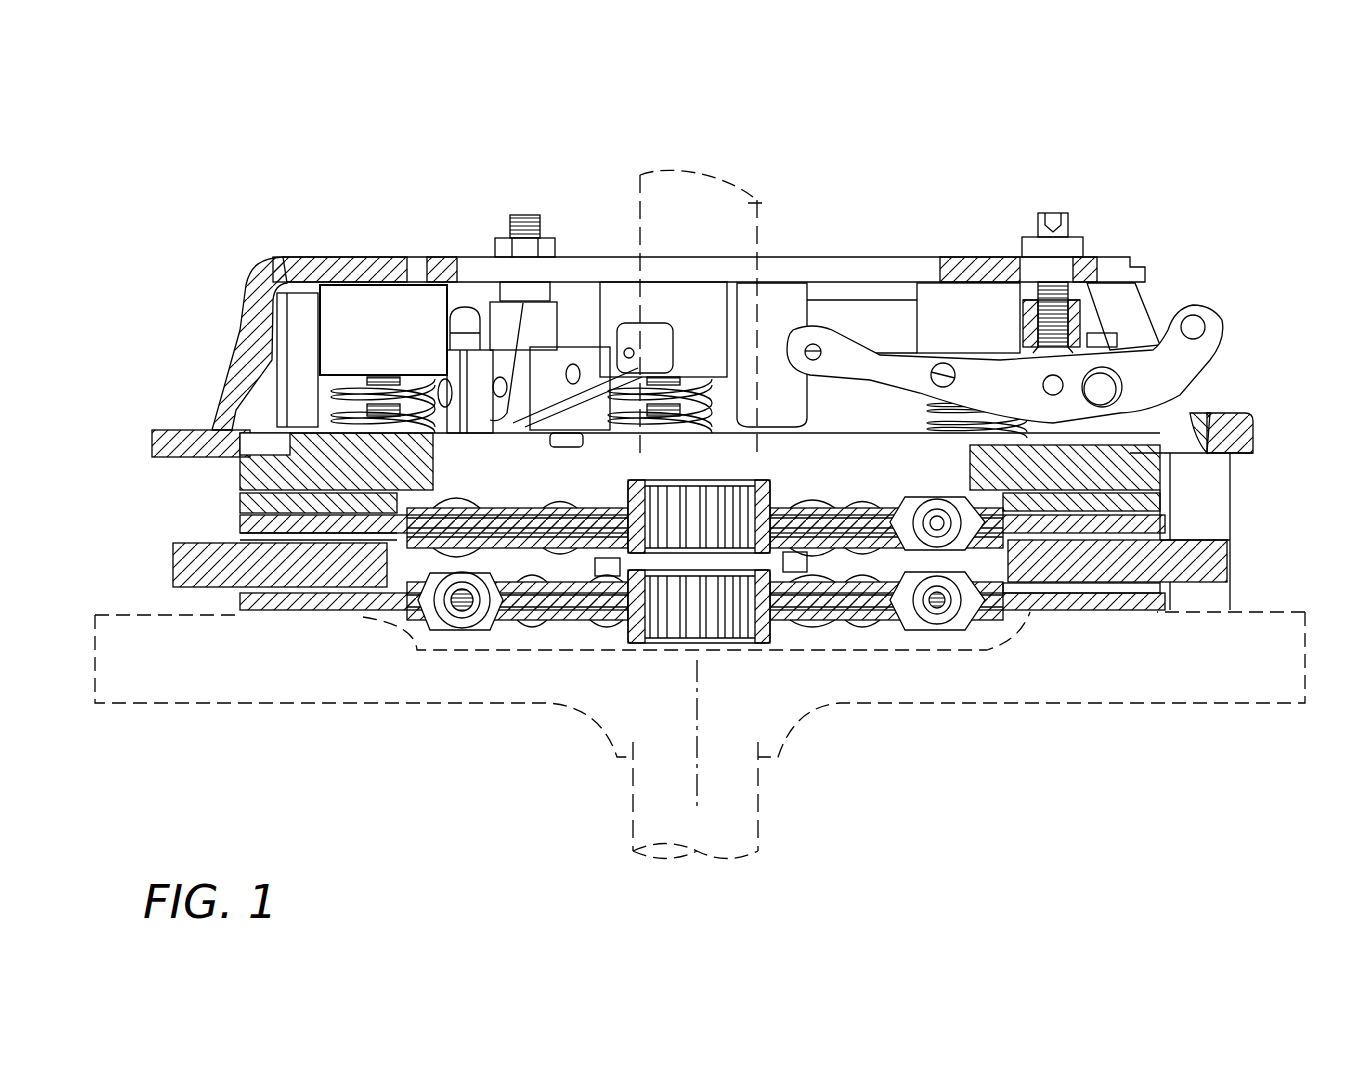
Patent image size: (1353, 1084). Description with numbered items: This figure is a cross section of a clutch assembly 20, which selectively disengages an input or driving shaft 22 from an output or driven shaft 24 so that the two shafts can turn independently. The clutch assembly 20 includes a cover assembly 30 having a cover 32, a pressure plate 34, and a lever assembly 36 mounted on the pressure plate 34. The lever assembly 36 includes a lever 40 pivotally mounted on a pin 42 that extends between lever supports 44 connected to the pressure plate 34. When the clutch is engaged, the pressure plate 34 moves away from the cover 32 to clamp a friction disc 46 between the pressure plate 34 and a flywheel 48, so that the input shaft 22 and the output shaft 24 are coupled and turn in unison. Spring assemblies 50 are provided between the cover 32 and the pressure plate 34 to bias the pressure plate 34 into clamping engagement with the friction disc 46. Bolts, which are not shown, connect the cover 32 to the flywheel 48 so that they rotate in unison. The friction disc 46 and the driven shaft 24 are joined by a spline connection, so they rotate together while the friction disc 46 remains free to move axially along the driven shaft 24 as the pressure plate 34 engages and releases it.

The clutch assembly 20 is at (709, 464).
The input or driving shaft 22 is at (760, 805).
The output or driven shaft 24 is at (770, 200).
The cover assembly 30 is at (955, 250).
The cover 32 is at (245, 318).
The pressure plate 34 is at (235, 483).
The lever assembly 36 is at (1220, 312).
The lever 40 is at (1212, 352).
The pin 42 is at (1122, 385).
The lever supports 44 is at (1137, 345).
The friction disc 46 is at (1165, 525).
The flywheel 48 is at (400, 708).
The spring assemblies 50 is at (318, 324).